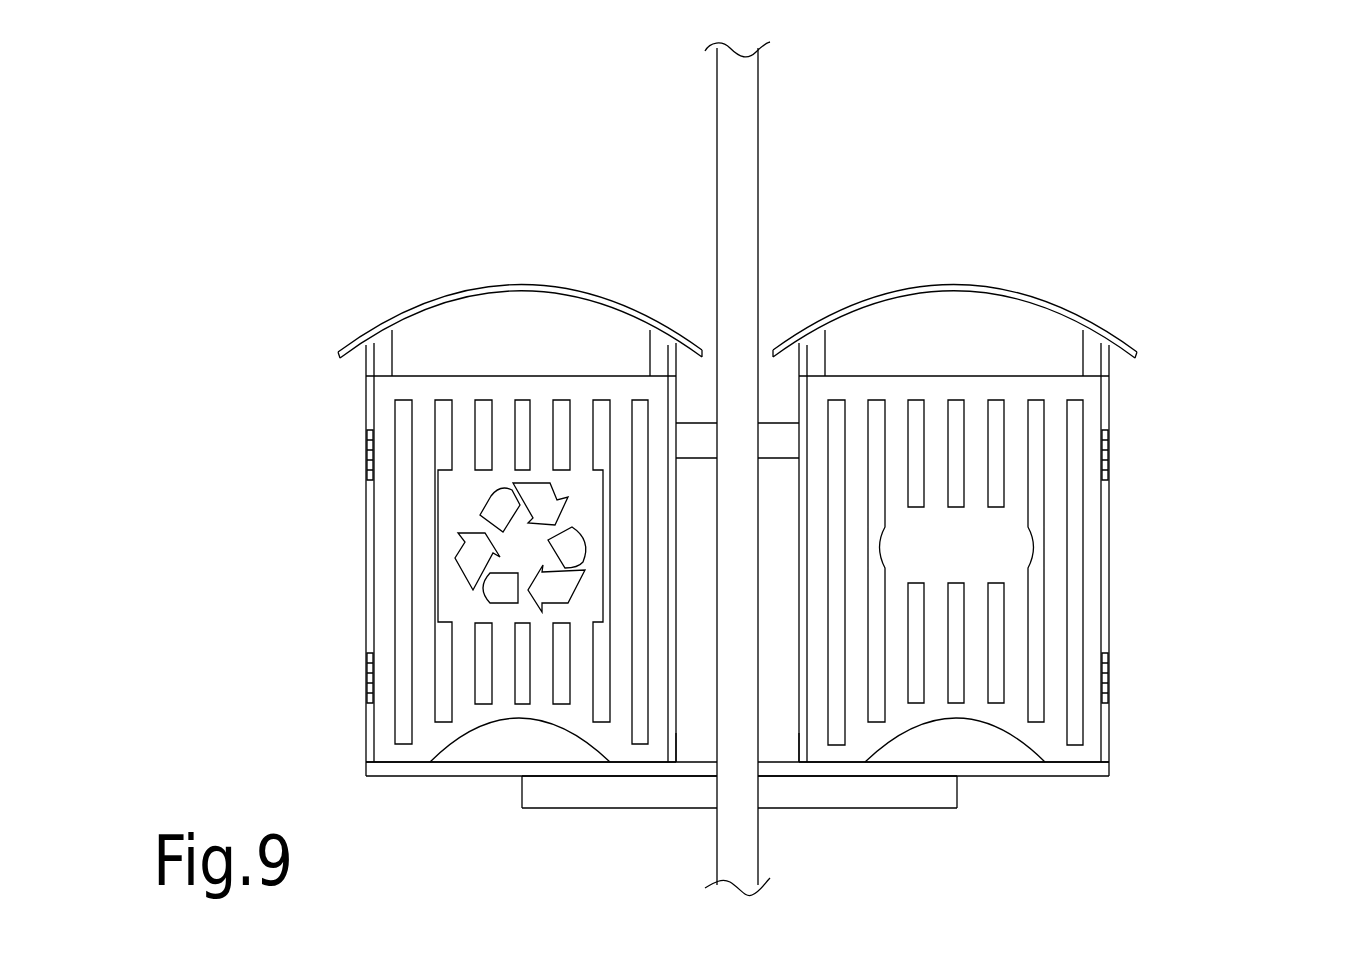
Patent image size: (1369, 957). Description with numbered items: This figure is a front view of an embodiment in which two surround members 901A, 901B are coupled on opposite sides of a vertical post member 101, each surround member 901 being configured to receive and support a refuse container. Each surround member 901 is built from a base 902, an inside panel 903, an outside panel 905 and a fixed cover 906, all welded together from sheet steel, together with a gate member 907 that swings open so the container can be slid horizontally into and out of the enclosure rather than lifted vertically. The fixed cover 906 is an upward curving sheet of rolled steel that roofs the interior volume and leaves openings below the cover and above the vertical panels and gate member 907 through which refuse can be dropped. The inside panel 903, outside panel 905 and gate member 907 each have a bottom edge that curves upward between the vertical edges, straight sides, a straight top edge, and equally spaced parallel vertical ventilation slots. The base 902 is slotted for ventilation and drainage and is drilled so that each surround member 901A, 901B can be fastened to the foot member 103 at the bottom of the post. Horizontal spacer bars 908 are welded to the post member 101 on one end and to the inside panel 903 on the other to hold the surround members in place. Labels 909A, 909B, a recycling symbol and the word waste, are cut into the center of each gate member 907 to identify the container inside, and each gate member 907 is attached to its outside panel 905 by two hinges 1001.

The post member 101 is at (733, 192).
The foot member 103 is at (570, 792).
The surround member 901 is at (257, 155).
The surround member 901A is at (308, 402).
The surround member 901B is at (1167, 402).
The base 902 is at (457, 770).
The inside panel 903 is at (675, 733).
The outside panel 905 is at (367, 520).
The fixed cover 906 is at (480, 285).
The gate member 907 is at (388, 755).
The horizontal spacer bar 908 is at (693, 440).
The label 909A is at (452, 597).
The label 909B is at (1000, 572).
The hinge 1001 is at (368, 450).